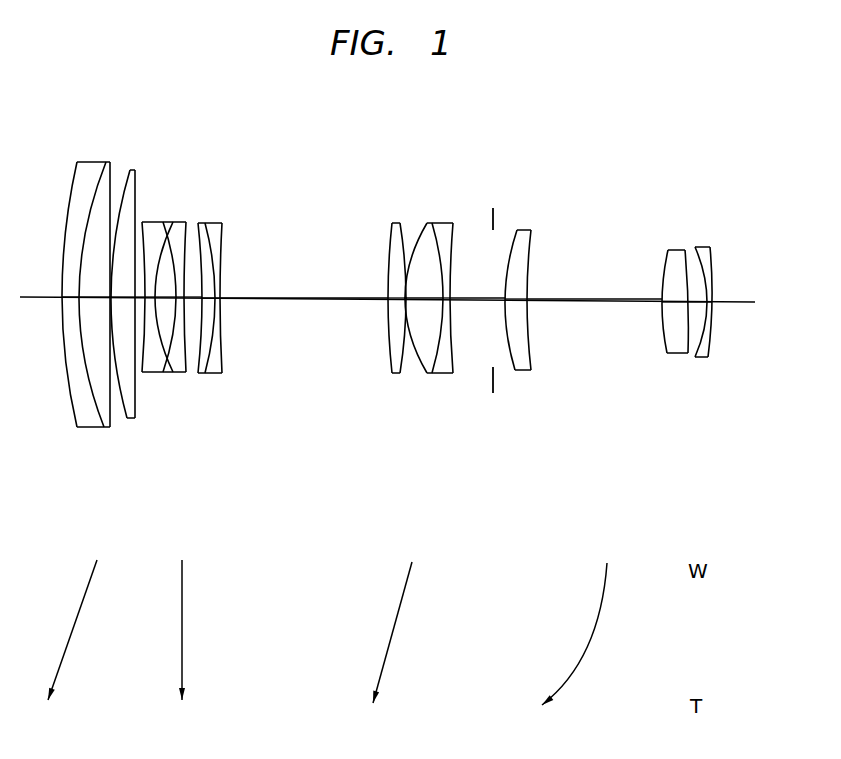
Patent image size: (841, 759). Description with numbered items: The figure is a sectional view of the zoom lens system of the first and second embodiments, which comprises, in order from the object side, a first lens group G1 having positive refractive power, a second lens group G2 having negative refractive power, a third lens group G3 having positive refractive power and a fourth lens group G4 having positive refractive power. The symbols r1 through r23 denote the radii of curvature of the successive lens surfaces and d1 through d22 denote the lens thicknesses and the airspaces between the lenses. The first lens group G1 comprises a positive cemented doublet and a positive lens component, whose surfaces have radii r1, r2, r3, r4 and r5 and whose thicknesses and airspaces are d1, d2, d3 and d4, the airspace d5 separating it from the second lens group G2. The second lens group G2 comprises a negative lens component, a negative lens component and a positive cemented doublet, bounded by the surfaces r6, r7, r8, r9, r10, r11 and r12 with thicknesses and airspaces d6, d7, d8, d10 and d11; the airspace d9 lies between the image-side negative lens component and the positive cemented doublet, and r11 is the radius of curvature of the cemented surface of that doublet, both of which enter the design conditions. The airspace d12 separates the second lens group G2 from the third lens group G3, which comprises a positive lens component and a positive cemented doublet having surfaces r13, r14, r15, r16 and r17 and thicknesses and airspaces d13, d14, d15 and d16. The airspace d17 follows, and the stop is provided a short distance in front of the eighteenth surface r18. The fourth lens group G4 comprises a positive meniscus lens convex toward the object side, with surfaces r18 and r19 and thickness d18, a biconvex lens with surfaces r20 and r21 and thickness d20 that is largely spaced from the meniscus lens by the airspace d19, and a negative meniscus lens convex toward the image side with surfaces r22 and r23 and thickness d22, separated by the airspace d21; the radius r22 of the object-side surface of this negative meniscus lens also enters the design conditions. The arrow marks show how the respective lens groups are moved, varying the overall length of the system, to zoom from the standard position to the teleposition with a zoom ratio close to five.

The first lens group G1 is at (141, 510).
The second lens group G2 is at (232, 510).
The third lens group G3 is at (468, 513).
The fourth lens group G4 is at (719, 513).
The radius of curvature of first lens surface r1 is at (72, 405).
The radius of curvature of second lens surface r2 is at (93, 400).
The radius of curvature of third lens surface r3 is at (109, 410).
The radius of curvature of fourth lens surface r4 is at (123, 400).
The radius of curvature of fifth lens surface r5 is at (135, 412).
The radius of curvature of sixth lens surface r6 is at (146, 373).
The radius of curvature of seventh lens surface r7 is at (158, 373).
The radius of curvature of eighth lens surface r8 is at (173, 373).
The radius of curvature of ninth lens surface r9 is at (187, 373).
The radius of curvature of tenth lens surface r10 is at (203, 373).
The radius of curvature of cemented surface r11 is at (217, 372).
The radius of curvature of twelfth lens surface r12 is at (222, 372).
The radius of curvature of thirteenth lens surface r13 is at (388, 360).
The radius of curvature of fourteenth lens surface r14 is at (403, 360).
The radius of curvature of fifteenth lens surface r15 is at (419, 358).
The radius of curvature of sixteenth lens surface r16 is at (435, 360).
The radius of curvature of seventeenth lens surface r17 is at (453, 362).
The eighteenth surface r18 is at (515, 365).
The radius of curvature of nineteenth lens surface r19 is at (532, 358).
The radius of curvature of twentieth lens surface r20 is at (662, 333).
The radius of curvature of twenty-first lens surface r21 is at (685, 333).
The radius of curvature of object-side surface of negative meniscus lens r22 is at (703, 347).
The radius of curvature of twenty-third lens surface r23 is at (710, 343).
The lens thickness d1 is at (67, 292).
The lens thickness d2 is at (98, 296).
The airspace d3 is at (108, 297).
The lens thickness d4 is at (120, 296).
The airspace d5 is at (140, 297).
The lens thickness d6 is at (145, 296).
The airspace d7 is at (166, 296).
The lens thickness d8 is at (179, 296).
The airspace d9 is at (192, 296).
The lens thickness d10 is at (207, 300).
The lens thickness d11 is at (220, 293).
The airspace d12 is at (313, 297).
The lens thickness d13 is at (390, 293).
The airspace d14 is at (407, 280).
The lens thickness d15 is at (420, 298).
The lens thickness d16 is at (445, 300).
The airspace d17 is at (463, 298).
The lens thickness d18 is at (517, 298).
The airspace d19 is at (593, 300).
The lens thickness d20 is at (675, 302).
The airspace d21 is at (692, 302).
The lens thickness d22 is at (708, 302).